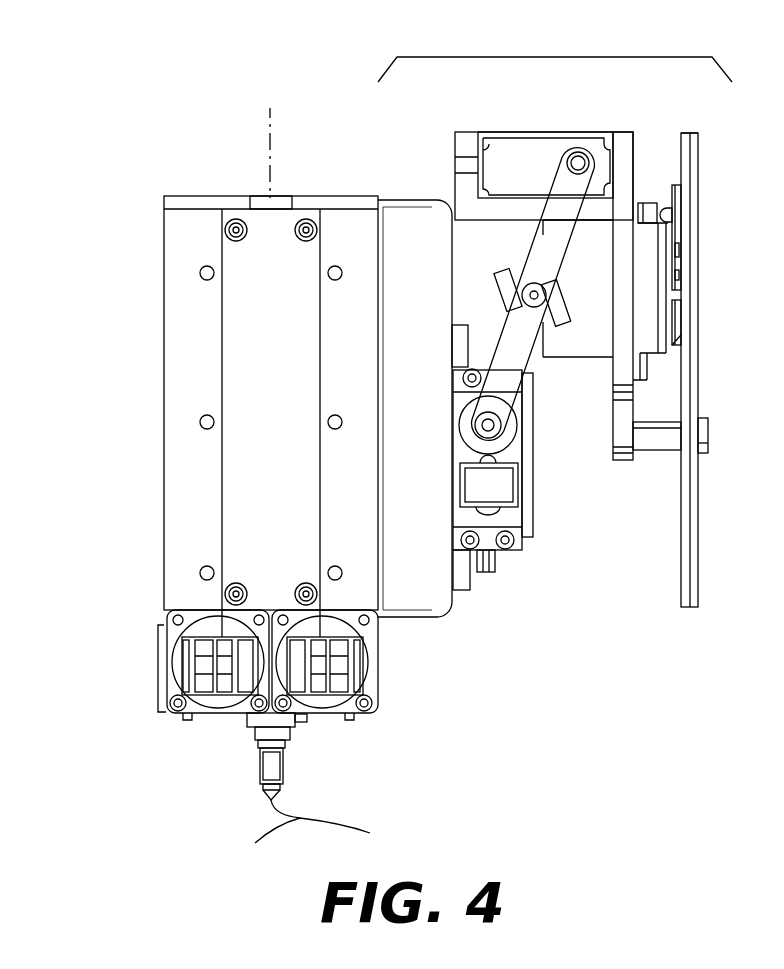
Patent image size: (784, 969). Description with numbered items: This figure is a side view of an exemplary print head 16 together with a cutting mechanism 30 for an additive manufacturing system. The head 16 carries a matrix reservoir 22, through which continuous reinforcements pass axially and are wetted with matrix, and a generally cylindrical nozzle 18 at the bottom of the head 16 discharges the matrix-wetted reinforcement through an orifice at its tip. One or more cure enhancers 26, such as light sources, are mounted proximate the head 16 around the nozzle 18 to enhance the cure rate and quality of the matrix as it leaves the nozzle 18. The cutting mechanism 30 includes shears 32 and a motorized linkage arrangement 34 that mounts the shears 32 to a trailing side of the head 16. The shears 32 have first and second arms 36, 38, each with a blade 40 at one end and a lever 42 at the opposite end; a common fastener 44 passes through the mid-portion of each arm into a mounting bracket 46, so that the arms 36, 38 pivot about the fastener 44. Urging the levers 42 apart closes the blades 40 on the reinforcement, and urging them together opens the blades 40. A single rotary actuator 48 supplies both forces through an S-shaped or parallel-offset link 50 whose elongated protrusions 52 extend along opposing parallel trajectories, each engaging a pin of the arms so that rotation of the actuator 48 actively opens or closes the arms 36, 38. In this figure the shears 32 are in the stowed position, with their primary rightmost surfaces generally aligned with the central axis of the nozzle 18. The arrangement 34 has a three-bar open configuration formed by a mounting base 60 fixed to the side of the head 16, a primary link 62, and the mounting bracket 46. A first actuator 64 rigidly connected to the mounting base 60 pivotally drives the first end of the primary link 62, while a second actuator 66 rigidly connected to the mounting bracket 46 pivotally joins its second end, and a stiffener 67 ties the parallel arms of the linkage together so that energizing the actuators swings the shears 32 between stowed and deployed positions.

The head 16 is at (193, 100).
The nozzle 18 is at (285, 765).
The matrix reservoir 22 is at (282, 431).
The cure enhancer 26 is at (190, 716).
The cutting mechanism 30 is at (568, 57).
The shears 32 is at (705, 550).
The motorized linkage arrangement 34 is at (588, 488).
The first arm 36 is at (684, 133).
The second arm 38 is at (693, 133).
The blade 40 is at (690, 565).
The lever 42 is at (690, 280).
The fastener 44 is at (708, 438).
The mounting bracket 46 is at (613, 425).
The rotary actuator 48 is at (656, 203).
The link 50 is at (668, 213).
The elongated protrusions 52 is at (681, 185).
The mounting base 60 is at (424, 328).
The primary link 62 is at (540, 265).
The first actuator 64 is at (528, 535).
The second actuator 66 is at (507, 132).
The stiffener 67 is at (504, 285).